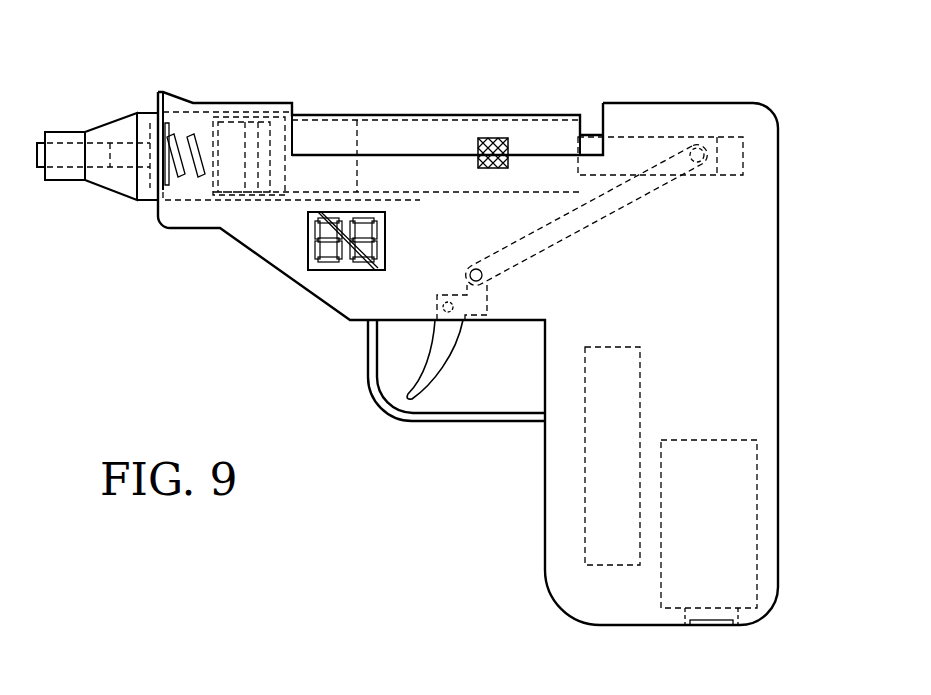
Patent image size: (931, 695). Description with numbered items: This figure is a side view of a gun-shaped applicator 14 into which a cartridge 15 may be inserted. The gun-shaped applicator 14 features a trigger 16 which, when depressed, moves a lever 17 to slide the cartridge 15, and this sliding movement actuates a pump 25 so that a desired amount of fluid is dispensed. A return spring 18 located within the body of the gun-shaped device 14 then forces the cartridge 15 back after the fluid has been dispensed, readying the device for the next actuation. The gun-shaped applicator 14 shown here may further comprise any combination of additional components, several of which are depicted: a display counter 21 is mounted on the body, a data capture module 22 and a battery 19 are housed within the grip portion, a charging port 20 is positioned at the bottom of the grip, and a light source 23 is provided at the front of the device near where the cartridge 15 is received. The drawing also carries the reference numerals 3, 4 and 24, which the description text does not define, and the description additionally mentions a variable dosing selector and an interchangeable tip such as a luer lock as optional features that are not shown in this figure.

The nozzle 3 is at (482, 0).
The glue stick 4 is at (627, 0).
The gun-shaped applicator 14 is at (766, 75).
The cartridge 15 is at (375, 140).
The trigger 16 is at (428, 378).
The lever 17 is at (677, 137).
The return spring 18 is at (187, 190).
The battery 19 is at (733, 508).
The charging port 20 is at (720, 625).
The display counter 21 is at (330, 272).
The data capture module 22 is at (605, 512).
The light source 23 is at (165, 92).
The temperature sensor 24 is at (498, 138).
The pump 25 is at (206, 137).